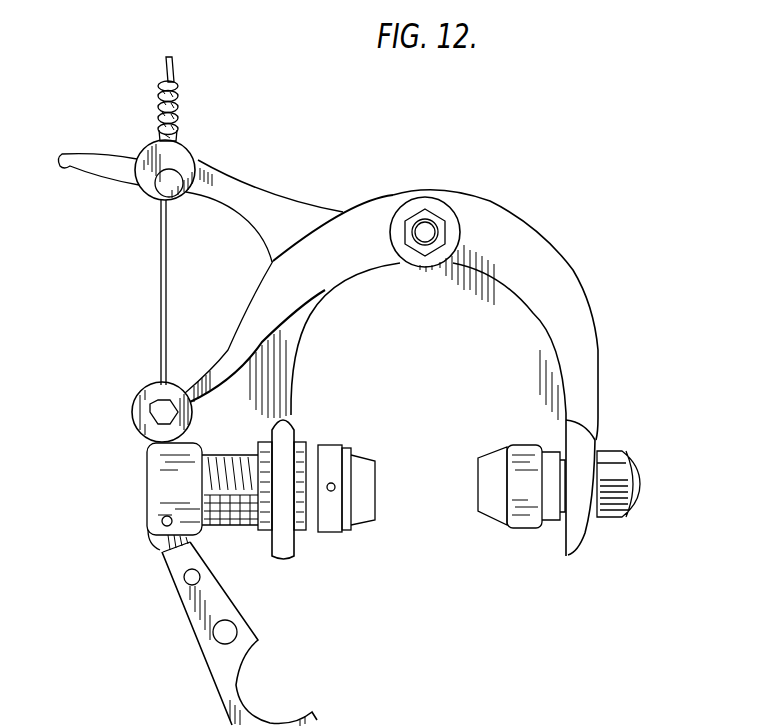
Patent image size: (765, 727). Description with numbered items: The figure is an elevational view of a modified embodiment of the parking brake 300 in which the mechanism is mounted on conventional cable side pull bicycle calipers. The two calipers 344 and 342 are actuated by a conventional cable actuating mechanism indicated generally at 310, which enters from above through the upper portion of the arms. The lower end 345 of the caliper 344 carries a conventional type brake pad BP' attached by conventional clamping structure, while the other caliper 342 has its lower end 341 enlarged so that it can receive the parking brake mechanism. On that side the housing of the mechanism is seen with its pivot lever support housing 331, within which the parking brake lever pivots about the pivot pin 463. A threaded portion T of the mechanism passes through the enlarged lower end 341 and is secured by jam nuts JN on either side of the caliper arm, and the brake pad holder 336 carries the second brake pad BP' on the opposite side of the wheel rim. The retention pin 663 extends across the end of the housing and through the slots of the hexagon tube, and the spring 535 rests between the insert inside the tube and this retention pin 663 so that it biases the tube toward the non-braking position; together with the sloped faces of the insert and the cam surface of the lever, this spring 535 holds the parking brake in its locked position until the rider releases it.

The brake caliper assembly 300 is at (535, 192).
The cable actuating mechanism 310 is at (132, 313).
The caliper 342 is at (276, 210).
The caliper 344 is at (540, 270).
The lower end of caliper 345 is at (580, 543).
The pivot lever support housing 331 is at (167, 458).
The brake shoe holder 336 is at (330, 455).
The lower end of caliper 341 is at (286, 562).
The pivot pin 463 is at (163, 521).
The retention pin 663 is at (333, 492).
The spring 535 is at (347, 631).
The threaded portion T is at (236, 462).
The jam nut JN is at (262, 540).
The brake pad BP' is at (458, 503).